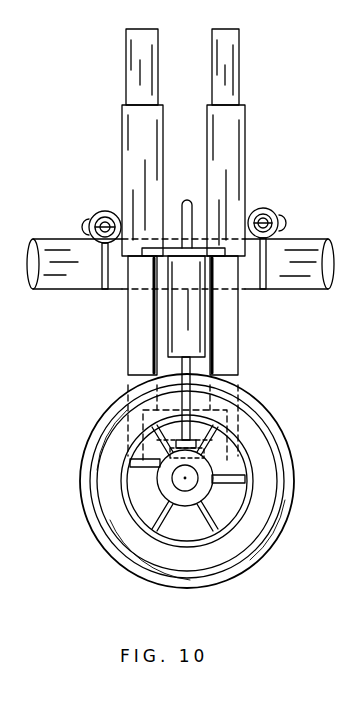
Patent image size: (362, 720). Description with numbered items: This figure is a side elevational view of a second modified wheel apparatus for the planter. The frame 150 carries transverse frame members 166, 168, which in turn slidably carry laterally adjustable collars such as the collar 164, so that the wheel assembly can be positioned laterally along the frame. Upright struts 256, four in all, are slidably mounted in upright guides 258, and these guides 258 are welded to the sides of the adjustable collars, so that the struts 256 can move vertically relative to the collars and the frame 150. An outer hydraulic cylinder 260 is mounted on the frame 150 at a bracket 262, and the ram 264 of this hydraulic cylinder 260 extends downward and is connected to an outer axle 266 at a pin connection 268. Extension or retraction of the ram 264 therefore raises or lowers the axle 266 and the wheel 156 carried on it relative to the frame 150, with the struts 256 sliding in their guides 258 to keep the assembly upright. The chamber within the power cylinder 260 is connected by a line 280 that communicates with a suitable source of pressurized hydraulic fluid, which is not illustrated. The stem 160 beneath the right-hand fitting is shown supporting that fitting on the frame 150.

The frame 150 is at (70, 290).
The wheel 156 is at (294, 471).
The stem of right fitting 160 is at (280, 221).
The laterally adjustable collar 164 is at (90, 221).
The transverse frame member 166 is at (102, 212).
The transverse frame member 168 is at (272, 212).
The upright strut 256 is at (127, 61).
The upright guide 258 is at (122, 124).
The outer hydraulic cylinder 260 is at (205, 330).
The bracket 262 is at (150, 252).
The ram 264 is at (190, 365).
The outer axle 266 is at (185, 478).
The pin connection 268 is at (237, 437).
The line 280 is at (188, 200).